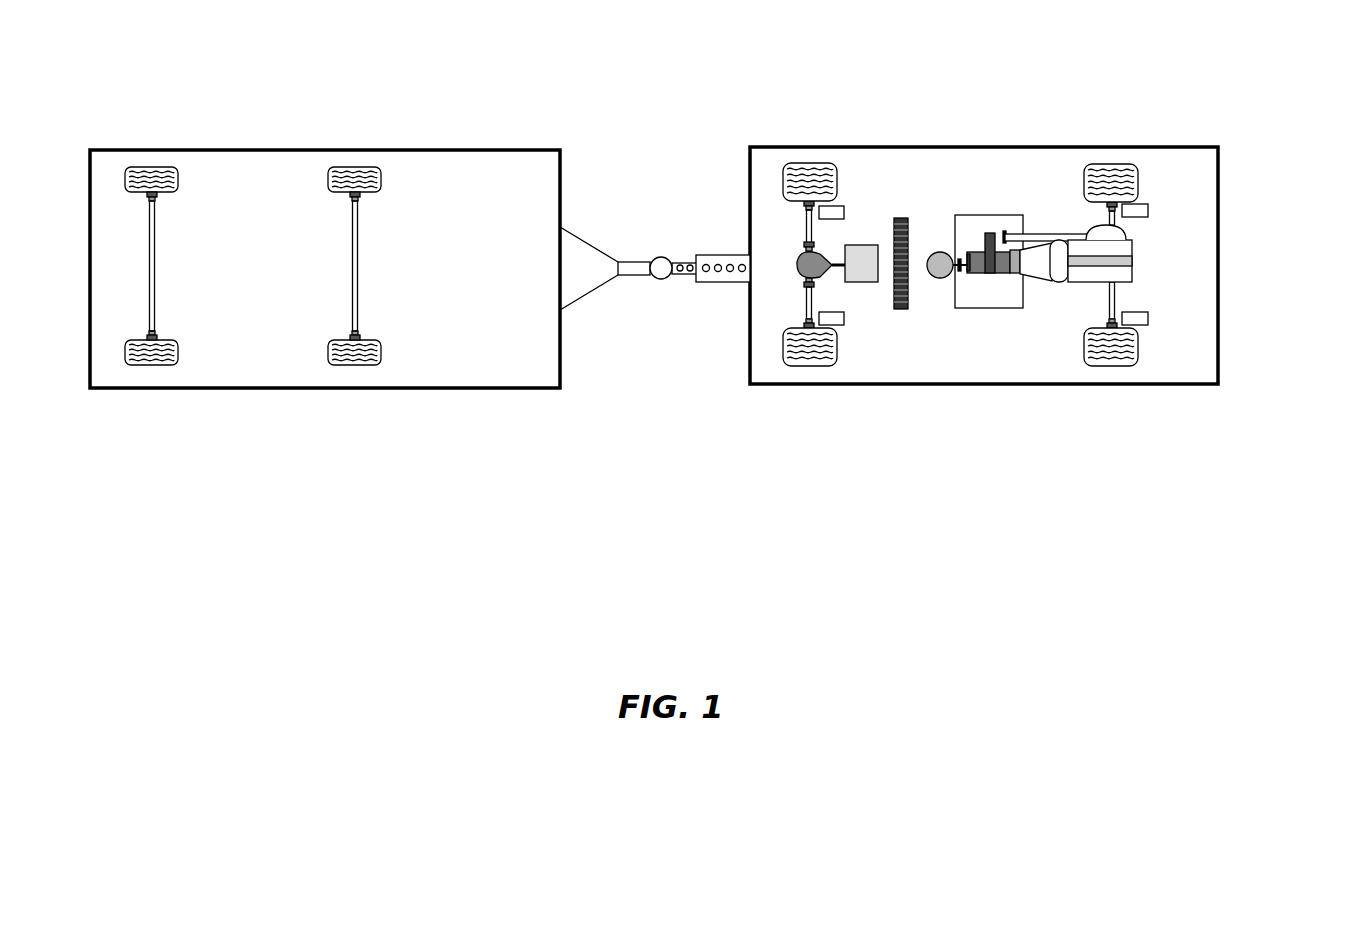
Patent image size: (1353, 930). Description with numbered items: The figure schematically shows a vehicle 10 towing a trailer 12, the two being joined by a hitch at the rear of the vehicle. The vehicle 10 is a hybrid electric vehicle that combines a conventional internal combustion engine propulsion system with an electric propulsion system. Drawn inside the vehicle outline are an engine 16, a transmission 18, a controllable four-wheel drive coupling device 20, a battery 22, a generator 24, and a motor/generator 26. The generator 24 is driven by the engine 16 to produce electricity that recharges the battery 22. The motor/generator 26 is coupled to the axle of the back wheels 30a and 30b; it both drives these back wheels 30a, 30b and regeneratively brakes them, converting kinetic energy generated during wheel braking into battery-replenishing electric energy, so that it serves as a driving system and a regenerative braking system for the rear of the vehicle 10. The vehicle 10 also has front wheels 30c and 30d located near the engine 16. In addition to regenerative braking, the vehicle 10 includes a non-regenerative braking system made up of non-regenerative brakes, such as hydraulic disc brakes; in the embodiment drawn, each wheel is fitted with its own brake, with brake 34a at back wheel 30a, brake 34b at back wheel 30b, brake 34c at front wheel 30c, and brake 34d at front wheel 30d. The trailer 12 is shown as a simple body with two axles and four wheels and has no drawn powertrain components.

The vehicle 10 is at (1220, 158).
The trailer 12 is at (130, 150).
The engine 16 is at (1132, 270).
The transmission 18 is at (1040, 265).
The four-wheel drive coupling device 20 is at (1002, 215).
The battery 22 is at (900, 218).
The generator 24 is at (940, 278).
The motor/generator 26 is at (868, 282).
The back wheel 30a is at (797, 163).
The back wheel 30b is at (810, 366).
The front wheel 30c is at (1133, 366).
The front wheel 30d is at (1113, 164).
The non-regenerative brake 34a is at (842, 206).
The non-regenerative brake 34b is at (843, 326).
The non-regenerative brake 34c is at (1148, 318).
The non-regenerative brake 34d is at (1148, 211).